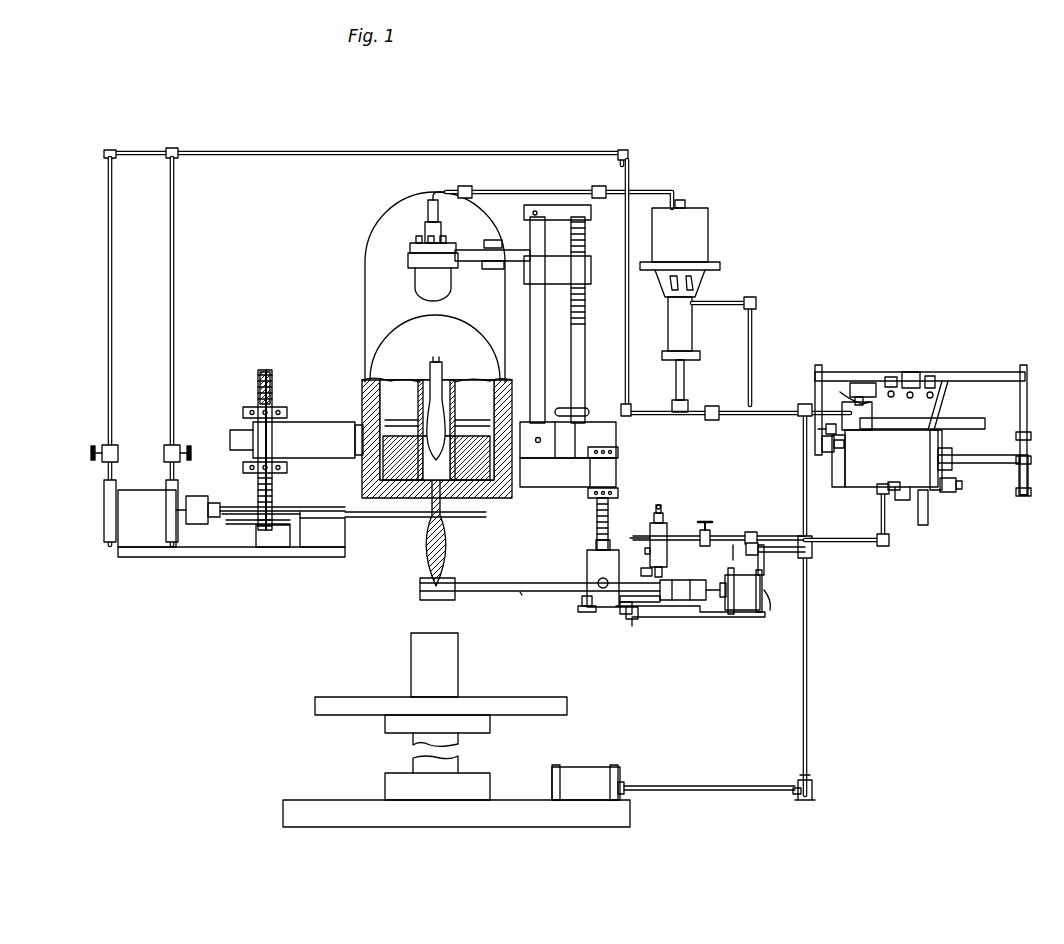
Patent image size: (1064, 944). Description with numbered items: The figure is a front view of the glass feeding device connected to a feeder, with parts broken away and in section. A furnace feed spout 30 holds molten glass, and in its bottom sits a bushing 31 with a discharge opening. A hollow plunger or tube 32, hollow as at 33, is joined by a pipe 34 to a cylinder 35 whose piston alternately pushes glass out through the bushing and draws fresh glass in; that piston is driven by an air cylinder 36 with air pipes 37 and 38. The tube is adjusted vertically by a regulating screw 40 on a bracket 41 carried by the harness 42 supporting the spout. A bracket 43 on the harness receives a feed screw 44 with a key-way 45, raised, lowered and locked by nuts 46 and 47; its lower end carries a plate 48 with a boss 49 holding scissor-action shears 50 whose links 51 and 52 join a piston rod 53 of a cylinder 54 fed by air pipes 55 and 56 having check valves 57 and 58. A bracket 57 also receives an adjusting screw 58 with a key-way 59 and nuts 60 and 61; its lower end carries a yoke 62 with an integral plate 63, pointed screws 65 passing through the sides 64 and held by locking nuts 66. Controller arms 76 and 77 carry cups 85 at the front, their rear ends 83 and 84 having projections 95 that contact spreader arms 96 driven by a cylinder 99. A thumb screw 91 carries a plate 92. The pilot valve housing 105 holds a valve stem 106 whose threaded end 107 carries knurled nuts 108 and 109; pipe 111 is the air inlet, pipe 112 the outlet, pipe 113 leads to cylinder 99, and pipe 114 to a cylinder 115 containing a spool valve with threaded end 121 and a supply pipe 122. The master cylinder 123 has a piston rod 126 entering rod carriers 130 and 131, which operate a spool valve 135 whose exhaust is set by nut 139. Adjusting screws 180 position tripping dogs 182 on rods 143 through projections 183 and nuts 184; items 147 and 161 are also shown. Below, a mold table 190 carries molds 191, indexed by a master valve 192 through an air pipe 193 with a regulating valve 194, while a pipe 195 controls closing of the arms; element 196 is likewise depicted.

The feed spout 30 is at (365, 298).
The bushing 31 is at (492, 498).
The plunger or tube 32 is at (425, 283).
The hollow 33 is at (437, 380).
The pipe 34 is at (528, 190).
The cylinder 35 is at (683, 246).
The air cylinder 36 is at (668, 320).
The air pipe 37 is at (722, 303).
The air pipe 38 is at (684, 382).
The regulating screw 40 is at (585, 330).
The bracket 41 is at (555, 405).
The harness 42 is at (512, 494).
The bracket 43 is at (320, 452).
The feed screw 44 is at (258, 384).
The key-way 45 is at (266, 372).
The nut 46 is at (243, 412).
The nut 47 is at (287, 470).
The plate 48 is at (245, 558).
The boss 49 is at (338, 532).
The shears 50 is at (386, 518).
The link 51 is at (252, 506).
The link 52 is at (258, 533).
The piston rod 53 is at (205, 520).
The cylinder 54 is at (147, 518).
The air pipe 55 is at (108, 398).
The air pipe 56 is at (170, 393).
The check valve / bracket 57 is at (118, 455).
The check valve / adjusting screw 58 is at (180, 452).
The key-way 59 is at (598, 440).
The nut 60 is at (618, 452).
The nut 61 is at (618, 494).
The yoke 62 is at (587, 556).
The plate 63 is at (718, 616).
The yoke sides 64 is at (603, 578).
The pointed screw 65 is at (630, 619).
The locking nut 66 is at (598, 582).
The controller arm 76 is at (497, 580).
The controller arm 77 is at (525, 593).
The rear end of controller arm 83 is at (646, 608).
The rear end of controller arm 84 is at (645, 600).
The cup 85 is at (420, 586).
The thumb screw 91 is at (585, 613).
The plate 92 is at (580, 592).
The projection 95 is at (660, 602).
The spreader arm 96 is at (686, 580).
The cylinder 99 is at (750, 596).
The pilot valve housing 105 is at (650, 556).
The valve stem 106 is at (655, 576).
The screw threaded end 107 is at (662, 505).
The knurled nut 108 is at (654, 510).
The knurled nut 109 is at (667, 527).
The pipe 111 is at (636, 540).
The pipe 112 is at (735, 534).
The pipe 113 is at (770, 600).
The pipe 114 is at (878, 520).
The cylinder 115 is at (906, 495).
The screw threaded end 121 is at (963, 488).
The supply pipe 122 is at (928, 520).
The master cylinder 123 is at (884, 474).
The piston rod 126 is at (998, 463).
The rod carrier 130 is at (1020, 478).
The rod carrier 131 is at (820, 448).
The spool valve 135 is at (938, 440).
The nut 139 is at (825, 436).
The rod 143 is at (1003, 382).
The rod 147 is at (992, 432).
The mechanism 161 is at (852, 390).
The adjusting screw 180 is at (982, 372).
The tripping dog 182 is at (924, 374).
The projection 183 is at (906, 370).
The nut 184 is at (895, 374).
The mold table 190 is at (944, 398).
The mold 191 is at (434, 672).
The master valve 192 is at (588, 782).
The air pipe 193 is at (702, 786).
The regulating valve 194 is at (815, 798).
The pipe 195 is at (778, 554).
The valve 196 is at (706, 540).